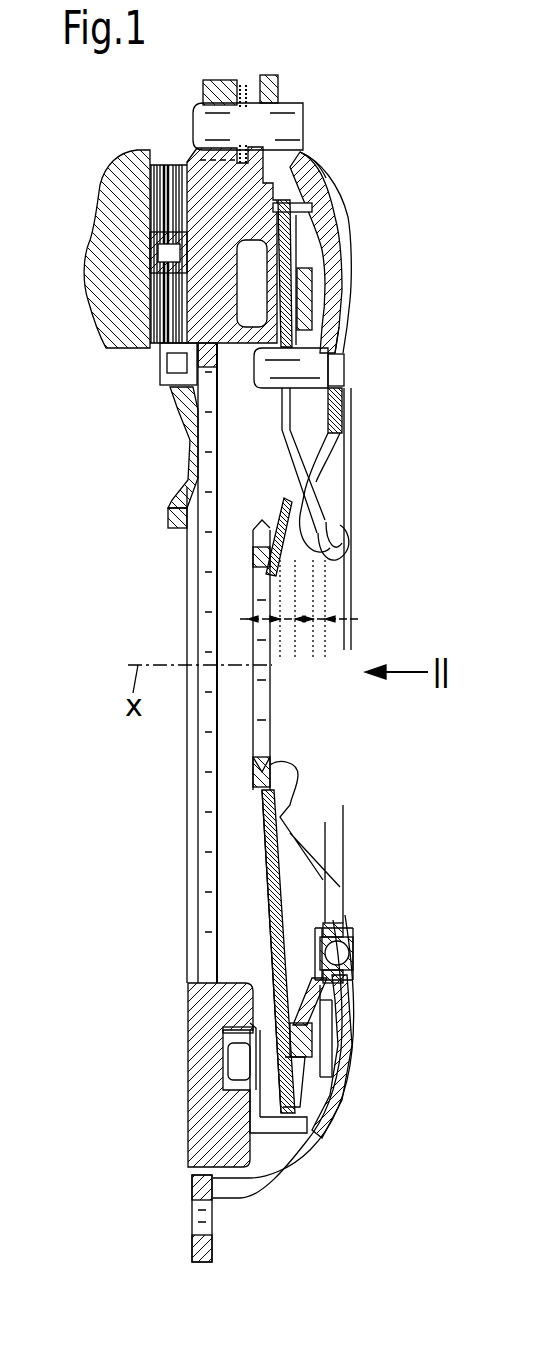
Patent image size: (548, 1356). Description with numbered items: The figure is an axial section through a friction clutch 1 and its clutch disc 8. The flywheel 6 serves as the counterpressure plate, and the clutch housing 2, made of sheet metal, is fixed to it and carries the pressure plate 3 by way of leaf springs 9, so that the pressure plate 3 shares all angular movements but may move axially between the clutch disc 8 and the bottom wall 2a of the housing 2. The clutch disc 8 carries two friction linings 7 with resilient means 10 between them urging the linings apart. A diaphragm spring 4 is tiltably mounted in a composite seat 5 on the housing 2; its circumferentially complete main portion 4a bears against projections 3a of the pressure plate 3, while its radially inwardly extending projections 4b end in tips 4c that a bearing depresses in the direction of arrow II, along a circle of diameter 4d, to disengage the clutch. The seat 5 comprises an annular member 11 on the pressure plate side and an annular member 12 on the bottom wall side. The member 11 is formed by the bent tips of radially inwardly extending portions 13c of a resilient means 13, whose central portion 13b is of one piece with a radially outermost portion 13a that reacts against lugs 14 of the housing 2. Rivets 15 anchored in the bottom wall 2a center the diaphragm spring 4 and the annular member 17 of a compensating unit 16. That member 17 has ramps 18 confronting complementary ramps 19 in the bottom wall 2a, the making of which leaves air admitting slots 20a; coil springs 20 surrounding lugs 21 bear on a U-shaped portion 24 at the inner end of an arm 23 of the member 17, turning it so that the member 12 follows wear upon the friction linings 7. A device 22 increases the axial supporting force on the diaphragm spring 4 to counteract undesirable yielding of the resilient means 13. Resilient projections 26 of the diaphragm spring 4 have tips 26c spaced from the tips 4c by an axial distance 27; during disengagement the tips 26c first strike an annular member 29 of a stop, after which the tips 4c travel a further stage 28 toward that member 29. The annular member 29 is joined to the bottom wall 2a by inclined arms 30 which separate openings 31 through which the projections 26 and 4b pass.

The friction clutch 1 is at (390, 157).
The clutch housing 2 is at (316, 1163).
The bottom wall of the housing 2a is at (340, 998).
The pressure plate 3 is at (200, 1125).
The projections on the pressure plate 3a is at (300, 207).
The diaphragm spring 4 is at (292, 1075).
The main portion of the diaphragm spring 4a is at (294, 252).
The projections of the diaphragm spring 4b is at (291, 427).
The tips of the projections 4c is at (336, 546).
The diameter 4d is at (332, 553).
The composite seat 5 is at (264, 998).
The flywheel 6 is at (133, 168).
The friction linings 7 is at (158, 167).
The clutch disc 8 is at (170, 512).
The leaf springs 9 is at (243, 84).
The resilient means 10 is at (160, 252).
The annular member of the seat 11 is at (245, 1040).
The annular member of the seat 12 is at (310, 1055).
The resilient means 13 is at (240, 1070).
The radially outermost portion of the resilient means 13a is at (325, 178).
The central portion of the resilient means 13b is at (252, 1052).
The radially inwardly extending portions 13c is at (183, 393).
The lugs of the housing 14 is at (286, 138).
The rivets 15 is at (344, 392).
The compensating unit 16 is at (363, 297).
The annular member of the compensating unit 17 is at (306, 277).
The ramps 18 is at (322, 1032).
The complementary ramps 19 is at (332, 1045).
The coil springs 20 is at (348, 943).
The slots 20a is at (339, 312).
The lugs 21 is at (357, 947).
The device 22 is at (287, 1135).
The arm of the annular member 23 is at (266, 996).
The U-shaped portion 24 is at (320, 933).
The projections 26 is at (296, 525).
The tips of the projections 26 26c is at (318, 550).
The axial distance 27 is at (319, 675).
The stage of axial movement 28 is at (287, 655).
The annular member of the stop 29 is at (258, 563).
The arms 30 is at (292, 830).
The openings 31 is at (315, 470).